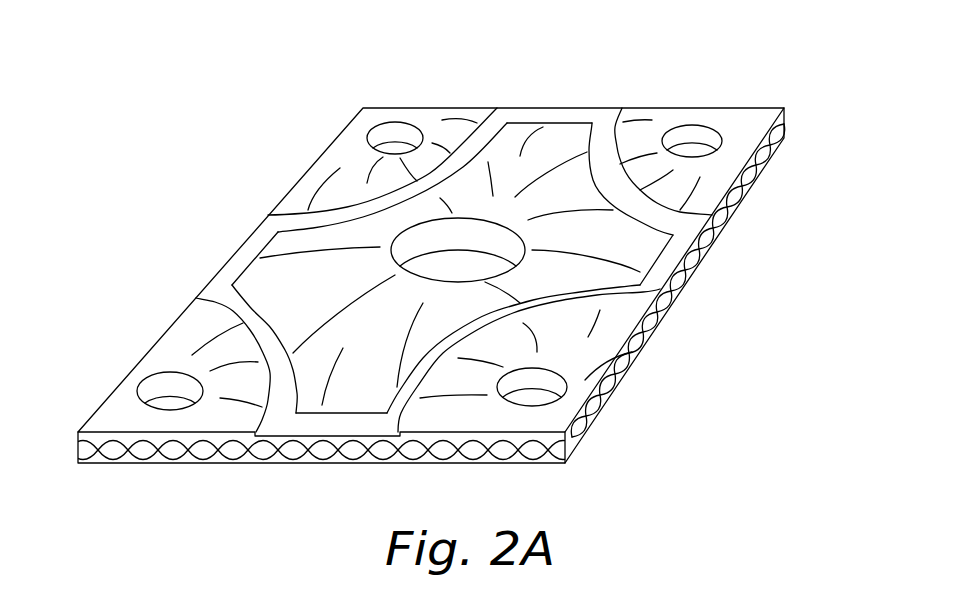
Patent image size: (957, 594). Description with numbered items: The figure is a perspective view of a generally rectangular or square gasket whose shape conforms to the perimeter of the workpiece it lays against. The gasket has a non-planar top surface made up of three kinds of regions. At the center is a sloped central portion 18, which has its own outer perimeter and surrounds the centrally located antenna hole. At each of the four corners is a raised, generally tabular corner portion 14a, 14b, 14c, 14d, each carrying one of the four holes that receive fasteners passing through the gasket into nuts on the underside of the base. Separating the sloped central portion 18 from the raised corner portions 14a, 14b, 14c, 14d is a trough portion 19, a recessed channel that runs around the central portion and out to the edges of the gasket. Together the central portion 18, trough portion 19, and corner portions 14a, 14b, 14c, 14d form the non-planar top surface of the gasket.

The raised corner portion 14a is at (343, 158).
The raised corner portion 14b is at (743, 120).
The raised corner portion 14c is at (640, 352).
The raised corner portion 14d is at (177, 353).
The sloped central portion 18 is at (553, 135).
The trough portion 19 is at (242, 253).